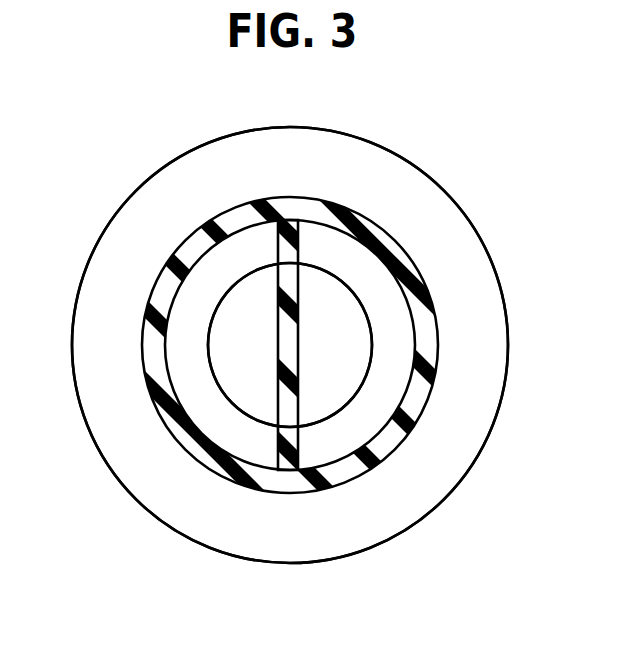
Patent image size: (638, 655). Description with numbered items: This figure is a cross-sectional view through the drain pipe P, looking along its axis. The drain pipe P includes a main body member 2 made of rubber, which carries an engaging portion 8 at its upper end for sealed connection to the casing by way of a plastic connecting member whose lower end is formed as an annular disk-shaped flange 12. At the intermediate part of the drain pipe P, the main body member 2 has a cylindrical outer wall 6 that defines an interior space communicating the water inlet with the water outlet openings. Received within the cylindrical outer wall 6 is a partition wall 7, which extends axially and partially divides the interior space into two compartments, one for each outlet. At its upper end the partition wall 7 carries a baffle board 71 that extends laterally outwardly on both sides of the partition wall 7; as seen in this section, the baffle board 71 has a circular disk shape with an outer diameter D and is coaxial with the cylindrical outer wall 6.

The main body member 2 is at (415, 165).
The engaging portion 8 is at (425, 211).
The cylindrical outer wall 6 is at (427, 333).
The flange 12 is at (398, 324).
The baffle board 71 is at (357, 292).
The partition wall 7 is at (290, 328).
The outer diameter D is at (232, 291).
The drain pipe P is at (8, 138).